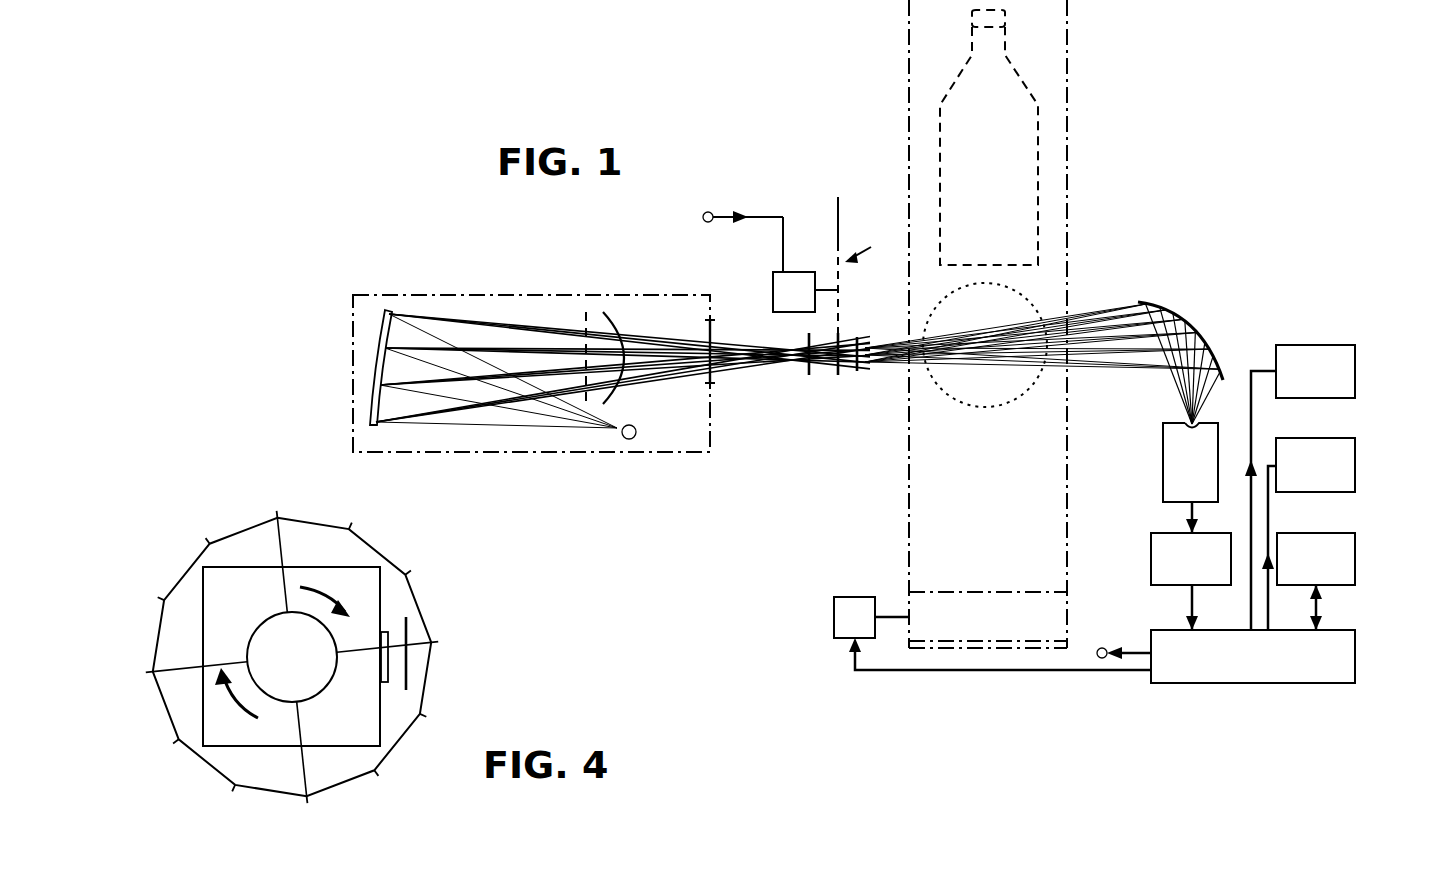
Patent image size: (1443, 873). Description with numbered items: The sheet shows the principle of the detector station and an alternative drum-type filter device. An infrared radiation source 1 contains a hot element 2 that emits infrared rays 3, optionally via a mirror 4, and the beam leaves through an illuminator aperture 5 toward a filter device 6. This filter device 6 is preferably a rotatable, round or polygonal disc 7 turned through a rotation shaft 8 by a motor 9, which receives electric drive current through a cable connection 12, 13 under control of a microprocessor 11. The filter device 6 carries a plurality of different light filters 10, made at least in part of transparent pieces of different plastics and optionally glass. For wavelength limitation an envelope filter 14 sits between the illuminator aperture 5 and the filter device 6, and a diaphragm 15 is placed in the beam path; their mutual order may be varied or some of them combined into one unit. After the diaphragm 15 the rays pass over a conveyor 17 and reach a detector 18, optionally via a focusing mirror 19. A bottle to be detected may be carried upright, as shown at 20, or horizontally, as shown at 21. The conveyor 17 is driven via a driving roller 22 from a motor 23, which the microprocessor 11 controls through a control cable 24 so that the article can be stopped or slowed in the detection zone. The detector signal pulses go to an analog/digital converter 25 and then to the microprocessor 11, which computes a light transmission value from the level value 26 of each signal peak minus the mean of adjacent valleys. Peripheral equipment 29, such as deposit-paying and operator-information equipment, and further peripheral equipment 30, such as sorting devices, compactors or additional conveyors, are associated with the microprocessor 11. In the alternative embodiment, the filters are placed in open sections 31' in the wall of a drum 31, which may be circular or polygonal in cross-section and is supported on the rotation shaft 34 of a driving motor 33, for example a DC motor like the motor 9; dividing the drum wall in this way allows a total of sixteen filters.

In FIG. 1, the infrared radiation source 1 is at (503, 295).
In FIG. 4, the infrared radiation source 1 is at (368, 595).
In FIG. 1, the hot element 2 is at (636, 438).
In FIG. 1, the infrared rays 3 is at (604, 314).
In FIG. 1, the mirror 4 is at (372, 385).
In FIG. 1, the illuminator aperture 5 is at (714, 331).
In FIG. 4, the illuminator aperture 5 is at (386, 686).
In FIG. 1, the filter device 6 is at (868, 282).
In FIG. 1, the rotatable disc 7 is at (847, 312).
In FIG. 1, the rotation shaft 8 is at (828, 289).
In FIG. 1, the motor 9 is at (778, 275).
In FIG. 1, the light filters 10 is at (845, 213).
In FIG. 1, the microprocessor 11 is at (1253, 656).
In FIG. 1, the cable connection 12 is at (1124, 637).
In FIG. 1, the cable connection 13 is at (741, 225).
In FIG. 1, the envelope filter 14 is at (806, 380).
In FIG. 4, the envelope filter 14 is at (408, 627).
In FIG. 1, the diaphragm 15 is at (860, 376).
In FIG. 1, the conveyor 17 is at (1050, 67).
In FIG. 1, the detector 18 is at (1190, 462).
In FIG. 1, the focusing mirror 19 is at (1185, 336).
In FIG. 1, the bottle in upright position 20 is at (1035, 300).
In FIG. 1, the bottle in horizontal position 21 is at (1025, 172).
In FIG. 1, the driving roller 22 is at (962, 630).
In FIG. 1, the motor 23 is at (861, 603).
In FIG. 1, the control cable 24 is at (1010, 671).
In FIG. 1, the analog/digital converter 25 is at (1162, 562).
In FIG. 1, the level value 26 is at (1352, 556).
In FIG. 1, the peripheral equipment 29 is at (1308, 534).
In FIG. 1, the peripheral equipment 30 is at (1300, 487).
In FIG. 4, the drum 31 is at (275, 650).
In FIG. 4, the open sections 31' is at (481, 680).
In FIG. 4, the driving motor 33 is at (300, 685).
In FIG. 4, the rotation shaft 34 is at (283, 700).